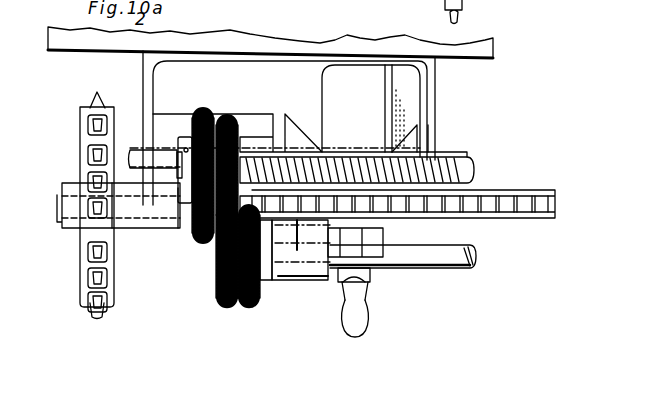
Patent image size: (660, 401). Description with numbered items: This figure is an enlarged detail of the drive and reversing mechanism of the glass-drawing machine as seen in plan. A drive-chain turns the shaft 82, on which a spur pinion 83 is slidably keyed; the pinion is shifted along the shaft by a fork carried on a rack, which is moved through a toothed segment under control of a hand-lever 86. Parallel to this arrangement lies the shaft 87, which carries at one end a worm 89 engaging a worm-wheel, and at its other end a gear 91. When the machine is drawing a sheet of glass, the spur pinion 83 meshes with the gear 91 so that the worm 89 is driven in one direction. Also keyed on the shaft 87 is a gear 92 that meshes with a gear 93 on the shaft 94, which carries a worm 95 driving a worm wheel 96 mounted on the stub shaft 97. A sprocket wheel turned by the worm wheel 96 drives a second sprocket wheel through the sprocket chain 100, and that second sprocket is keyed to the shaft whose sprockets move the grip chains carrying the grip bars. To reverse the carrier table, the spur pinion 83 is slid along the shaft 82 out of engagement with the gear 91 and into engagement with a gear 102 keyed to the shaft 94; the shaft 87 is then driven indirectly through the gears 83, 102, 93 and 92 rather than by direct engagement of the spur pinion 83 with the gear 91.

The shaft 82 is at (57, 205).
The spur pinion 83 is at (191, 239).
The hand-lever 86 is at (349, 317).
The shaft 87 is at (212, 257).
The worm 89 is at (441, 12).
The gear 91 is at (247, 292).
The gear 92 is at (223, 292).
The gear 93 is at (236, 126).
The shaft 94 is at (178, 163).
The worm 95 is at (398, 152).
The worm wheel 96 is at (474, 165).
The stub shaft 97 is at (386, 235).
The sprocket chain 100 is at (546, 199).
The gear 102 is at (208, 105).